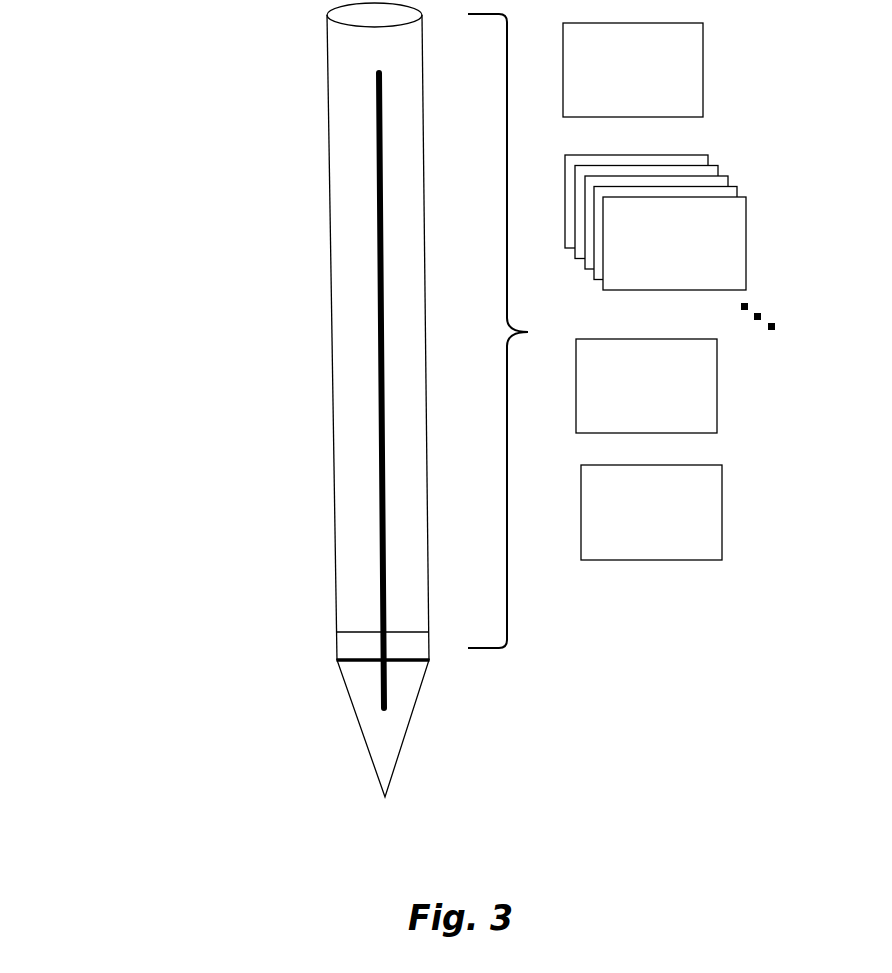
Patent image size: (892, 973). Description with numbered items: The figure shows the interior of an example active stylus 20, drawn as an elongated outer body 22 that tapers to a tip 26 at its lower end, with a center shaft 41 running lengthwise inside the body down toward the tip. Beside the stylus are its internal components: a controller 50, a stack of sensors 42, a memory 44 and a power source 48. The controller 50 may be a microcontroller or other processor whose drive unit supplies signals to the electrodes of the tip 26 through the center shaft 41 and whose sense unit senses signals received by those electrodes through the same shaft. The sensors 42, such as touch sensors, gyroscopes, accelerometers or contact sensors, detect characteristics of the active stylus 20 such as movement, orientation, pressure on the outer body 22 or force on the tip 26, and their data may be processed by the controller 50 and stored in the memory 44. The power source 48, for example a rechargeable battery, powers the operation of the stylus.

The active stylus 20 is at (310, 400).
The outer body 22 is at (318, 226).
The center shaft 41 is at (366, 562).
The tip 26 is at (427, 722).
The controller 50 is at (619, 96).
The sensors 42 is at (660, 271).
The memory 44 is at (632, 412).
The power source 48 is at (637, 552).